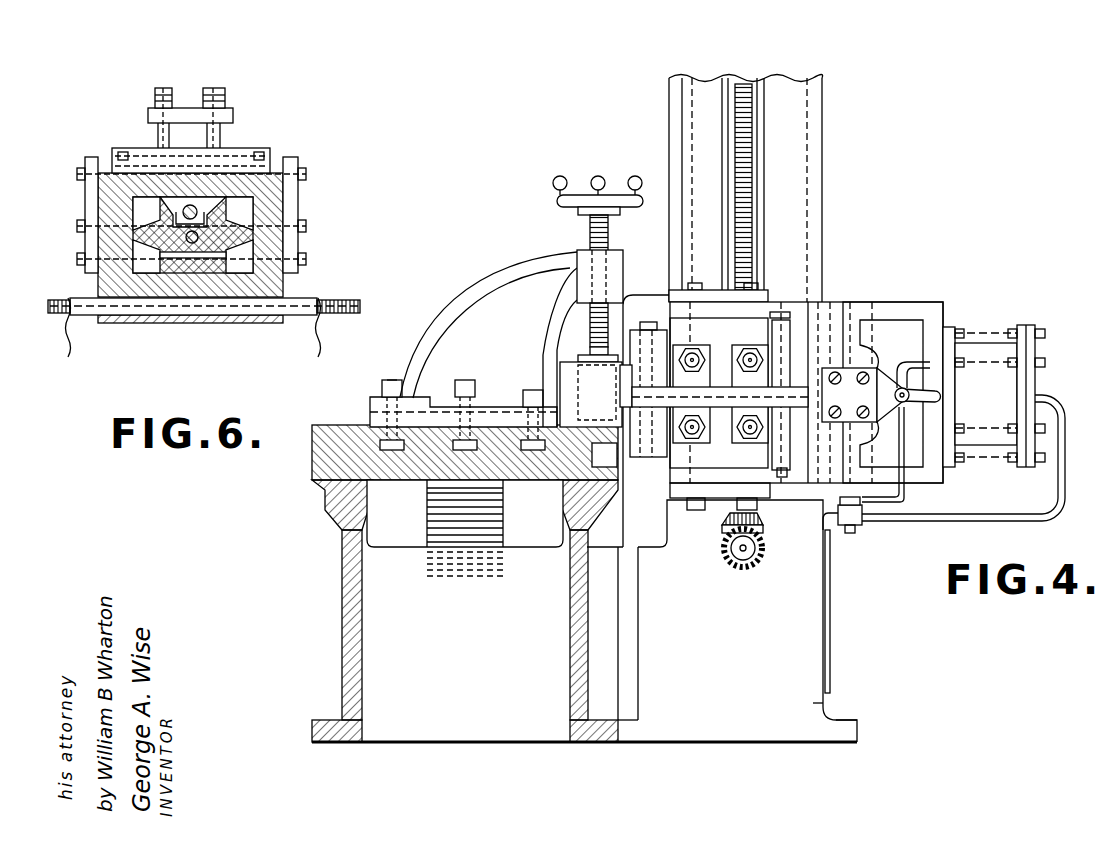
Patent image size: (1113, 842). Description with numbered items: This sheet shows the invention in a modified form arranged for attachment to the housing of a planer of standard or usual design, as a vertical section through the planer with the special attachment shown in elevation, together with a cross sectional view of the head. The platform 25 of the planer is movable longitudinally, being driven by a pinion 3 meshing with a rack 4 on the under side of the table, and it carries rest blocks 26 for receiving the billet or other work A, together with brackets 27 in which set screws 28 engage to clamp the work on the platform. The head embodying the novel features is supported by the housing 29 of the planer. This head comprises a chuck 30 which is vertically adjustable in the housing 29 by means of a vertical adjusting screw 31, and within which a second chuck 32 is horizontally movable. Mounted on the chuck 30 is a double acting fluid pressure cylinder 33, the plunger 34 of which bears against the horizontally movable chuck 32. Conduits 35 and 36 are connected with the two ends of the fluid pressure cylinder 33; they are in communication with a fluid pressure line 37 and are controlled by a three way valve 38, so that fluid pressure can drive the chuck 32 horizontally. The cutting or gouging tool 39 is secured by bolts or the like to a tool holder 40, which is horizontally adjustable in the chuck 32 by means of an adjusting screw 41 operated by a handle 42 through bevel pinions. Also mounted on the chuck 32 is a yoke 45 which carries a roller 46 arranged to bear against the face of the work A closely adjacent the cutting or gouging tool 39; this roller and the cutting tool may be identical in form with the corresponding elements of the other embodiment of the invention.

In FIG. 4, the pinion 3 is at (503, 531).
In FIG. 4, the rack 4 is at (503, 495).
In FIG. 4, the platform 25 is at (312, 458).
In FIG. 4, the rest blocks 26 is at (478, 415).
In FIG. 4, the brackets 27 is at (506, 272).
In FIG. 4, the set screws 28 is at (590, 230).
In FIG. 6, the housing 29 is at (312, 344).
In FIG. 4, the housing 29 is at (823, 703).
In FIG. 6, the chuck 30 is at (280, 284).
In FIG. 4, the chuck 30 is at (832, 302).
In FIG. 6, the vertical adjusting screw 31 is at (352, 305).
In FIG. 4, the vertical adjusting screw 31 is at (742, 95).
In FIG. 6, the second chuck 32 is at (268, 243).
In FIG. 4, the double acting fluid pressure cylinder 33 is at (978, 350).
In FIG. 6, the plunger 34 is at (192, 243).
In FIG. 4, the conduit 35 is at (952, 516).
In FIG. 4, the conduit 36 is at (906, 494).
In FIG. 4, the fluid pressure line 37 is at (830, 607).
In FIG. 4, the three way valve 38 is at (858, 525).
In FIG. 6, the cutting or gouging tool 39 is at (190, 130).
In FIG. 4, the cutting or gouging tool 39 is at (722, 400).
In FIG. 6, the tool holder 40 is at (278, 192).
In FIG. 4, the tool holder 40 is at (862, 320).
In FIG. 6, the adjusting screw 41 is at (172, 200).
In FIG. 4, the handle 42 is at (903, 362).
In FIG. 6, the yoke 45 is at (295, 200).
In FIG. 4, the yoke 45 is at (672, 292).
In FIG. 4, the roller 46 is at (645, 330).
In FIG. 4, the work A is at (582, 362).